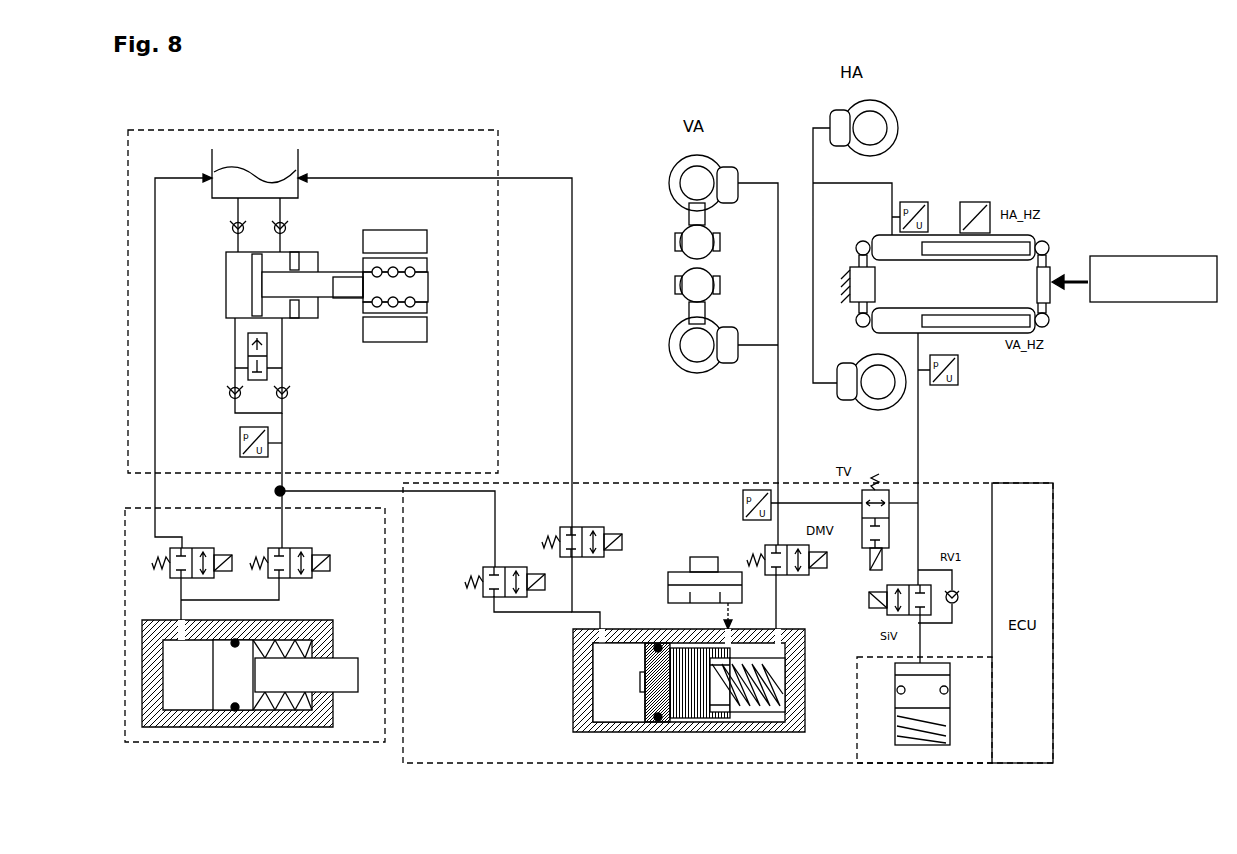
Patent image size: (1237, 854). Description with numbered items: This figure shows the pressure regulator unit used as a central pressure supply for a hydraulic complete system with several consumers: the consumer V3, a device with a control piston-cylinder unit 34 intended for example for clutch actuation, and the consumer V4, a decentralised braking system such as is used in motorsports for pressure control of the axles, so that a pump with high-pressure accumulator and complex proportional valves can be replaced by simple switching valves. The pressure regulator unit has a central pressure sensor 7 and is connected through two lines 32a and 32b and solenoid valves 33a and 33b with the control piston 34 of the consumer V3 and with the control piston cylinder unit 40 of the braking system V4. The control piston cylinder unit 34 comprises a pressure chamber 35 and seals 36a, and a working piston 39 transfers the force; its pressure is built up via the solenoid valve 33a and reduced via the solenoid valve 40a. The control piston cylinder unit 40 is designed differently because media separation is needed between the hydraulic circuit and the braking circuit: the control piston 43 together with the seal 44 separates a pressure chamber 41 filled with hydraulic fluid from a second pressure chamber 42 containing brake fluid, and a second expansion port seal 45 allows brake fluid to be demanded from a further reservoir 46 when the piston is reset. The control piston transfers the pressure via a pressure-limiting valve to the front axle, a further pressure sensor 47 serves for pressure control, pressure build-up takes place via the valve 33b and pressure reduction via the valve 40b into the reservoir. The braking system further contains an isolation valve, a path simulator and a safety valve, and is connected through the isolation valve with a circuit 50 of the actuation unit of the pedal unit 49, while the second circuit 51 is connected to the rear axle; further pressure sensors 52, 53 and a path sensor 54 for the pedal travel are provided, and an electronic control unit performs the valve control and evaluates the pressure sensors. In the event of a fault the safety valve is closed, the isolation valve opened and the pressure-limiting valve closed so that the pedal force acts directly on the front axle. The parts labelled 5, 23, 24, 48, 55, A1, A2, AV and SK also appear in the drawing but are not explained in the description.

The reservoir 5 is at (290, 180).
The central pressure sensor 7 is at (272, 443).
The hydraulic line 23 is at (158, 384).
The hydraulic line 24 is at (572, 310).
The line 32a is at (280, 520).
The line 32b is at (482, 480).
The solenoid valve 33a is at (300, 548).
The solenoid valve 33b is at (500, 567).
The control piston-cylinder unit 34 is at (215, 697).
The pressure chamber 35 is at (180, 697).
The seal 36a is at (233, 712).
The working piston 39 is at (285, 673).
The control piston cylinder unit 40 is at (582, 727).
The solenoid valve 40a is at (197, 548).
The valve 40b is at (582, 540).
The pressure chamber 41 is at (624, 713).
The second pressure chamber 42 is at (760, 700).
The control piston 43 is at (693, 718).
The seal 44 is at (658, 718).
The second expansion port seal 45 is at (720, 725).
The further reservoir 46 is at (672, 572).
The further pressure sensor 47 is at (745, 490).
The accumulator 48 is at (895, 705).
The pedal unit 49 is at (1127, 256).
The circuit of the actuation unit 50 is at (908, 318).
The second circuit 51 is at (908, 245).
The pressure sensor 52 is at (956, 385).
The pressure sensor 53 is at (912, 202).
The path sensor 54 is at (897, 128).
The electronic control unit 55 is at (1030, 502).
The pressure supply cylinder A1 is at (250, 285).
The piston A2 is at (264, 308).
The outlet valve AV is at (268, 358).
The piston stroke SK is at (351, 265).
The consumer V3 is at (363, 745).
The consumer V4 is at (873, 765).